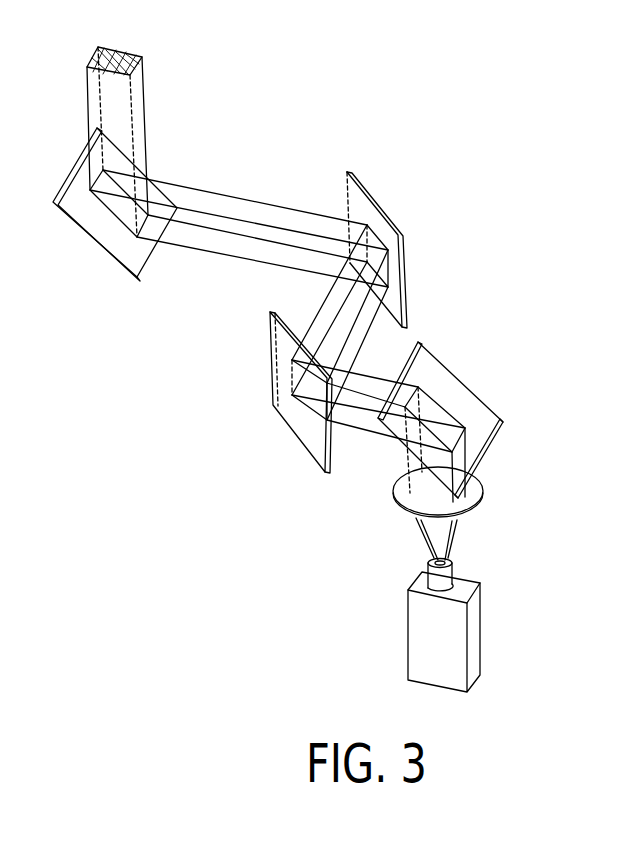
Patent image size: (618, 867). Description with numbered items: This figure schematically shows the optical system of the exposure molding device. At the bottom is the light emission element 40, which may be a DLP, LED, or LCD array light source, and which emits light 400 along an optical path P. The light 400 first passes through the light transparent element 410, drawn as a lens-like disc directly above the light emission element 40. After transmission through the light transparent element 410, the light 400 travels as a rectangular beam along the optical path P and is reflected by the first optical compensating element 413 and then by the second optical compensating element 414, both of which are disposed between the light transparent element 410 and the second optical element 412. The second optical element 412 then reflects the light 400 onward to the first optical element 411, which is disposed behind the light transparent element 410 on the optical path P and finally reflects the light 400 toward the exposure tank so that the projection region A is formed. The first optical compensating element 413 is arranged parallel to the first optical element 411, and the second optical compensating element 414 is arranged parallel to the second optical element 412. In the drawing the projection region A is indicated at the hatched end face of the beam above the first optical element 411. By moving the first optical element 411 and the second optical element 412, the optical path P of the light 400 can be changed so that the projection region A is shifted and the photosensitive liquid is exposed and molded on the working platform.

The projection region A is at (127, 48).
The optical path P is at (277, 332).
The first optical element 411 is at (93, 223).
The second optical element 412 is at (358, 202).
The second optical compensating element 414 is at (283, 378).
The first optical compensating element 413 is at (450, 390).
The light transparent element 410 is at (472, 498).
The light 400 is at (453, 545).
The light emission element 40 is at (472, 637).